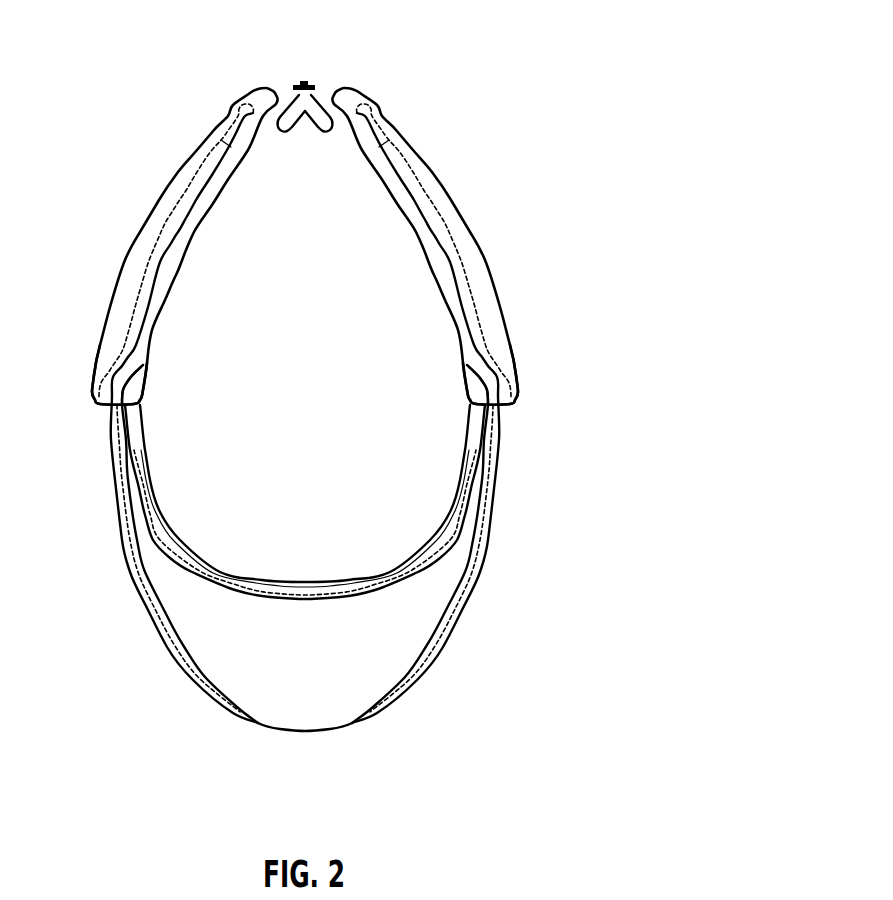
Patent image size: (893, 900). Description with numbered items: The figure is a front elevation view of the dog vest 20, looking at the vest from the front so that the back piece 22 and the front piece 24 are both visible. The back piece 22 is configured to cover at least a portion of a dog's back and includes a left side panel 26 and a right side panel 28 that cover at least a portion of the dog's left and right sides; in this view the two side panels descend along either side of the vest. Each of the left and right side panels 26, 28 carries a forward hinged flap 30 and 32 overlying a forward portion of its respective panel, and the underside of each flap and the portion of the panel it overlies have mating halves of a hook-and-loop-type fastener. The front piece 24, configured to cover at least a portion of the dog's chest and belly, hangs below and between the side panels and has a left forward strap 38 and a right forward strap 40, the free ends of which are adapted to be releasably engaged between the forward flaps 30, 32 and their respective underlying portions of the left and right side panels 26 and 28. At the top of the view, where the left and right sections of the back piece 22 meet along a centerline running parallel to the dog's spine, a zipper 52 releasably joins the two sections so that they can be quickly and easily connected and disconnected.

The dog vest 20 is at (494, 130).
The back piece 22 is at (146, 198).
The front piece 24 is at (330, 666).
The left side panel 26 is at (479, 225).
The right side panel 28 is at (103, 290).
The forward hinged flap 30 is at (498, 342).
The forward hinged flap 32 is at (107, 347).
The left forward strap 38 is at (497, 447).
The right forward strap 40 is at (112, 408).
The zipper 52 is at (262, 36).